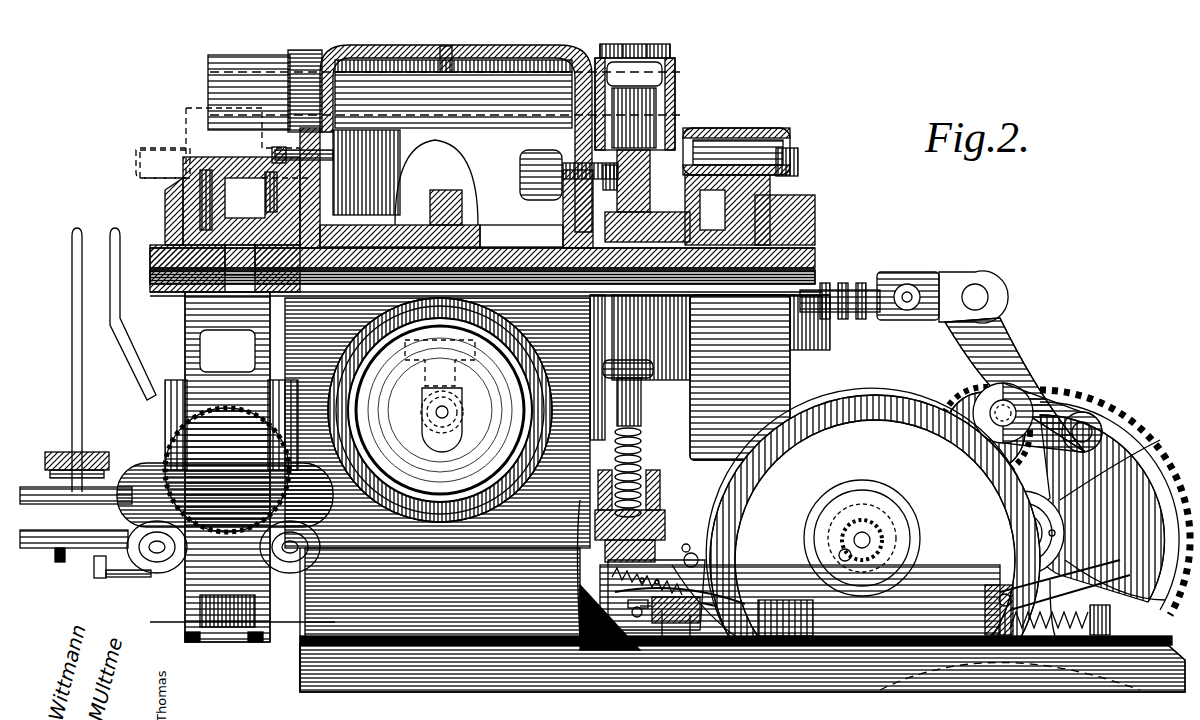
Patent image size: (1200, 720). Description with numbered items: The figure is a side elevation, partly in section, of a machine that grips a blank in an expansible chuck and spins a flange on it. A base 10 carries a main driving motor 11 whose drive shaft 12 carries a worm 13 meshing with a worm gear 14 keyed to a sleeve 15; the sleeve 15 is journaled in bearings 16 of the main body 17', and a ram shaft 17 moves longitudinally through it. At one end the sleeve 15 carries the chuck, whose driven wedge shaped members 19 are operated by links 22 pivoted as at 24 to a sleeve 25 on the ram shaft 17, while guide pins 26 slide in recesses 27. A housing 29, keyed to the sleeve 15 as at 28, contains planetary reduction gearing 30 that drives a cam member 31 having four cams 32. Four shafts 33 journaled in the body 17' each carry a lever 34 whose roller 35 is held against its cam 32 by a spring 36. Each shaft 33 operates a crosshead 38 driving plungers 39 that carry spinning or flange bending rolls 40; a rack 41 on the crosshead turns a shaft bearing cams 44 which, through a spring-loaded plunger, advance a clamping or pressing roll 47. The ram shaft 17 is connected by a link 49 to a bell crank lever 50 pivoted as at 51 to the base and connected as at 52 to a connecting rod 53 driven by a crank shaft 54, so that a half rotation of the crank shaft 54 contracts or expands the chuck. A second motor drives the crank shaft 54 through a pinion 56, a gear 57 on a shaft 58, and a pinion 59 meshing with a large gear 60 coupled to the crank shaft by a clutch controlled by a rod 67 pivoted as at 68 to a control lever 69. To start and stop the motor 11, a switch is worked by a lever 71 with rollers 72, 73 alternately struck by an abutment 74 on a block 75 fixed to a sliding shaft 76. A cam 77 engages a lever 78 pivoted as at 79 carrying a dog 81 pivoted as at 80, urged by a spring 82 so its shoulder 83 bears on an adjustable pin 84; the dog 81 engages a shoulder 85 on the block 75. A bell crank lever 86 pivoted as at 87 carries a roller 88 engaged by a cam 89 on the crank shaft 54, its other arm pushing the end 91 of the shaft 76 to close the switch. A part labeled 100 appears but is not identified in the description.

The base 10 is at (318, 650).
The main driving motor 11 is at (440, 410).
The drive shaft 12 is at (436, 416).
The worm 13 is at (420, 410).
The worm gear 14 is at (458, 380).
The sleeve 15 is at (520, 222).
The bearings 16 is at (610, 232).
The ram shaft 17 is at (482, 253).
The main body 17' is at (473, 124).
The driven wedge shaped members 19 is at (240, 160).
The links 22 is at (245, 198).
The pivotal connection 24 is at (200, 260).
The sleeve 25 is at (262, 268).
The guide pins 26 is at (175, 203).
The recesses 27 is at (203, 168).
The key 28 is at (815, 247).
The casing or housing 29 is at (800, 168).
The planetary reduction gearing 30 is at (758, 140).
The cam member 31 is at (660, 214).
The cams 32 is at (648, 157).
The shafts 33 is at (678, 70).
The lever 34 is at (662, 86).
The roller 35 is at (640, 118).
The spring 36 is at (660, 468).
The crosshead 38 is at (95, 555).
The plungers 39 is at (125, 510).
The spinning or flange bending roll 40 is at (140, 148).
The rack 41 is at (186, 108).
The cams 44 is at (200, 540).
The clamping or pressing roll 47 is at (225, 550).
The link 49 is at (940, 280).
The bell crank lever 50 is at (1025, 345).
The pivot 51 is at (1010, 398).
The pivotal connection 52 is at (1095, 418).
The connecting rod 53 is at (1105, 505).
The crank shaft 54 is at (1045, 535).
The pinion 56 is at (845, 555).
The gear 57 is at (835, 525).
The shaft 58 is at (795, 600).
The pinion 59 is at (815, 512).
The large gear 60 is at (955, 430).
The rod 67 is at (228, 628).
The pivotal connection 68 is at (98, 580).
The control lever 69 is at (70, 282).
The lever 71 is at (648, 604).
The roller 72 is at (632, 612).
The roller 73 is at (667, 601).
The abutment 74 is at (662, 640).
The block 75 is at (690, 640).
The shaft 76 is at (752, 650).
The cam 77 is at (672, 565).
The lever 78 is at (685, 545).
The pivot 79 is at (693, 556).
The pivot 80 is at (647, 573).
The dog 81 is at (683, 595).
The spring 82 is at (633, 592).
The shoulder 83 is at (643, 573).
The adjustable pin 84 is at (661, 574).
The abutment or shoulder 85 is at (716, 605).
The bell crank lever 86 is at (1040, 630).
The pivot 87 is at (990, 590).
The roller 88 is at (1075, 586).
The cam 89 is at (1063, 569).
The end of shaft 91 is at (998, 600).
The bolt 100 is at (285, 165).